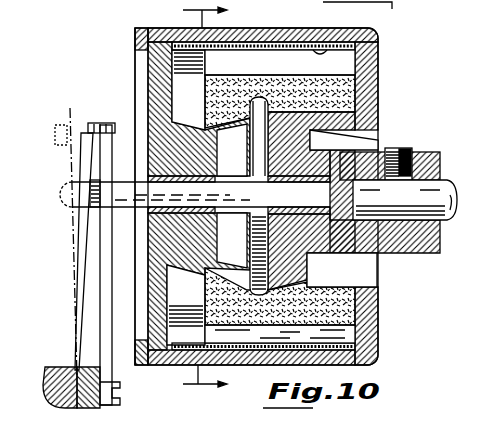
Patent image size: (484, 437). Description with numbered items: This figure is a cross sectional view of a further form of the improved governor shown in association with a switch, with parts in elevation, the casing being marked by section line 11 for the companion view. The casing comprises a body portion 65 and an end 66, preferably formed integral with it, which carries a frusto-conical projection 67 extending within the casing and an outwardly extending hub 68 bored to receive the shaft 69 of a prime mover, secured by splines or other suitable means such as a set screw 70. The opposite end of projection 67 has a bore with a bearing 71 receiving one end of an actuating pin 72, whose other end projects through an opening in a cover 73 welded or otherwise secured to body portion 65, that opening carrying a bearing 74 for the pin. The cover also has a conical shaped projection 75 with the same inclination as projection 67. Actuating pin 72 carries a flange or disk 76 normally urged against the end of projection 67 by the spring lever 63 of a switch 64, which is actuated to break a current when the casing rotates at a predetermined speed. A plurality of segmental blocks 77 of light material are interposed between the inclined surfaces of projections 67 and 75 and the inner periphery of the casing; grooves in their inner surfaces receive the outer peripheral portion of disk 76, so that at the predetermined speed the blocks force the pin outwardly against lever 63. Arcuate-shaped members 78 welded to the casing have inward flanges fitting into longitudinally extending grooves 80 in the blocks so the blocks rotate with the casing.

The section line 11- 11 is at (185, 201).
The spring lever 63 is at (82, 145).
The switch 64 is at (90, 367).
The body portion 65 is at (283, 73).
The end 66 is at (380, 63).
The frusto-conical projection 67 is at (280, 200).
The hub 68 is at (413, 253).
The shaft 69 is at (450, 180).
The set screw 70 is at (407, 153).
The bearing 71 is at (300, 150).
The actuating pin 72 is at (230, 210).
The cover 73 is at (148, 70).
The bearing 74 is at (170, 220).
The conical shaped projection 75 is at (195, 127).
The flange or disk 76 is at (241, 137).
The segmental blocks 77 is at (483, 270).
The arcuate-shaped members 78 is at (352, 350).
The longitudinally extending grooves 80 is at (338, 69).